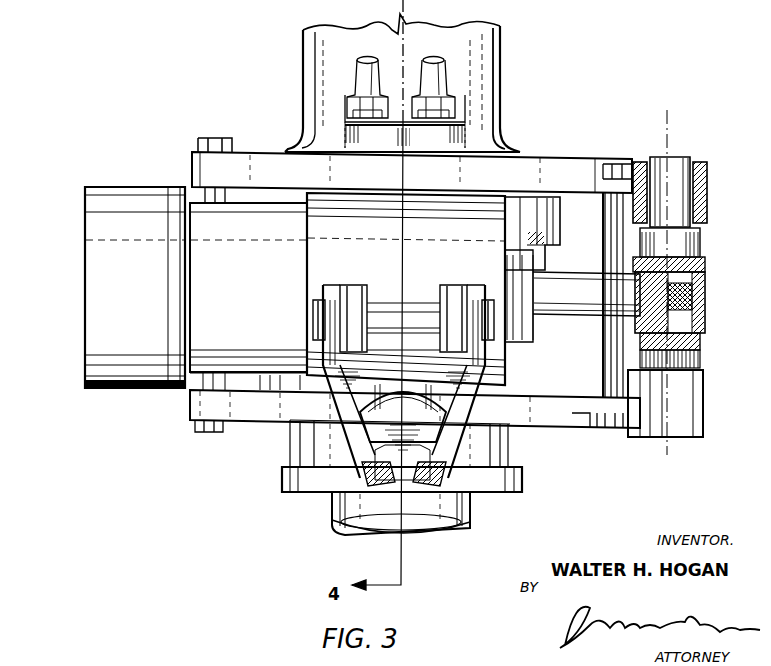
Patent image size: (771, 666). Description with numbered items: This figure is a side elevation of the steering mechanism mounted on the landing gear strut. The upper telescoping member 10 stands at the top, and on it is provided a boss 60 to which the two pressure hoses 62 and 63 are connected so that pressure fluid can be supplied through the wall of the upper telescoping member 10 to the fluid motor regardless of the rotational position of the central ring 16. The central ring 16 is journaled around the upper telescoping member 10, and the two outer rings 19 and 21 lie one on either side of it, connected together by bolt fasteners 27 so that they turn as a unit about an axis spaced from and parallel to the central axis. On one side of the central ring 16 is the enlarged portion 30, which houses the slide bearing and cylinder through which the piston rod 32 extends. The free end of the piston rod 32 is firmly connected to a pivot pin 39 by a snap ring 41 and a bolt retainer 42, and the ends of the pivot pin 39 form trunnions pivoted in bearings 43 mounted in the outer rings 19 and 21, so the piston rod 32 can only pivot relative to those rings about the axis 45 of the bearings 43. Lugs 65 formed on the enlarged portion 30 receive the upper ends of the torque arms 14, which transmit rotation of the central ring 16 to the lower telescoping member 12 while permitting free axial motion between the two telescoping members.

The upper telescoping member 10 is at (501, 72).
The lower telescoping member 12 is at (478, 512).
The torque arms 14 is at (416, 382).
The central ring 16 is at (556, 225).
The outer ring 19 is at (572, 175).
The outer ring 21 is at (556, 429).
The bolt fasteners 27 is at (214, 145).
The enlarged portion 30 is at (400, 236).
The piston rod 32 is at (575, 317).
The pivot pin 39 is at (688, 241).
The snap ring 41 is at (690, 260).
The bolt retainer 42 is at (700, 292).
The bearings 43 is at (707, 182).
The axis of the bearings 45 is at (672, 122).
The boss 60 is at (356, 142).
The pressure hose 62 is at (445, 72).
The pressure hose 63 is at (358, 72).
The lugs 65 is at (460, 286).